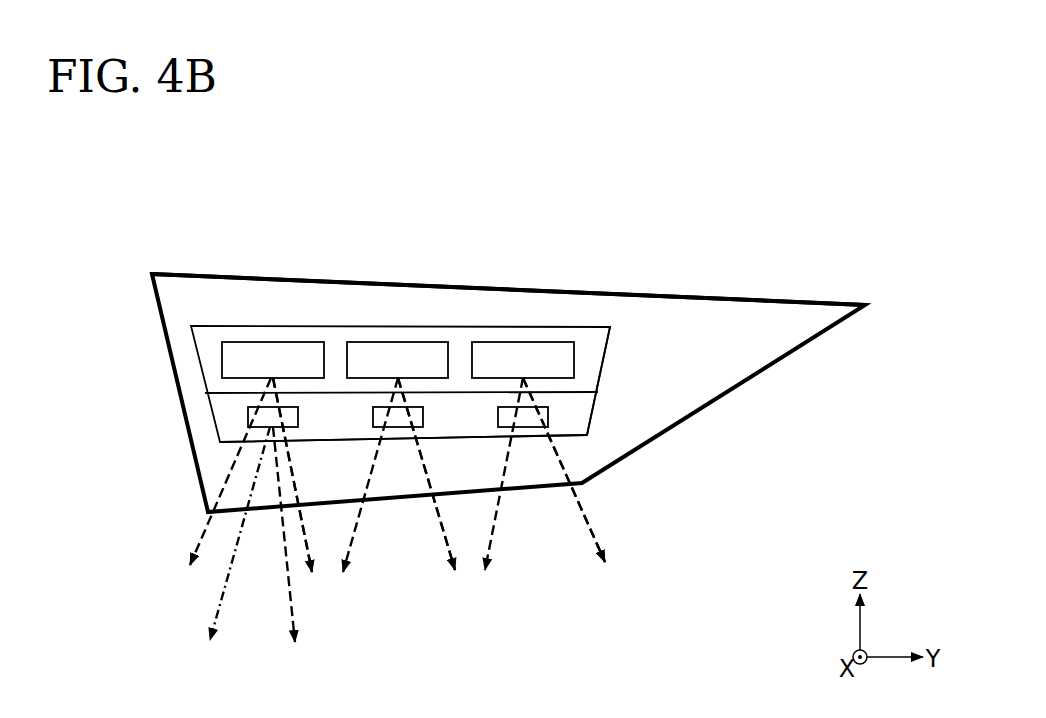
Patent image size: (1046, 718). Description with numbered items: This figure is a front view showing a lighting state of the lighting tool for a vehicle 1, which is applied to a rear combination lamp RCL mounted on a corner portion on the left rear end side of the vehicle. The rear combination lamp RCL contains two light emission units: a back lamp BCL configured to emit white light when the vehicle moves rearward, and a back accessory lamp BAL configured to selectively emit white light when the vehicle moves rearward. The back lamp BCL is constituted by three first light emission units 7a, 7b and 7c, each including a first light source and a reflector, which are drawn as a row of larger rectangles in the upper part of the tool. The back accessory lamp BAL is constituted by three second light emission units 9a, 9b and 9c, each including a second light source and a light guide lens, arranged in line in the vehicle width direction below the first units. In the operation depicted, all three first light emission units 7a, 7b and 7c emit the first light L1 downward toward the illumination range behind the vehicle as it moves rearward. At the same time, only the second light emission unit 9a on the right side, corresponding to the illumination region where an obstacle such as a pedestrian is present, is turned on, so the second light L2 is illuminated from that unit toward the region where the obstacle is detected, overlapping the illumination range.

The lighting tool for a vehicle 1 is at (221, 315).
The first light emission unit 7a is at (267, 342).
The first light emission unit 7b is at (397, 342).
The first light emission unit 7c is at (530, 342).
The second light emission unit 9a is at (265, 428).
The second light emission unit 9b is at (400, 428).
The second light emission unit 9c is at (527, 428).
The first light L1 is at (302, 521).
The second light L2 is at (287, 573).
The rear combination lamp RCL is at (662, 294).
The back lamp BCL is at (603, 357).
The back accessory lamp BAL is at (592, 418).